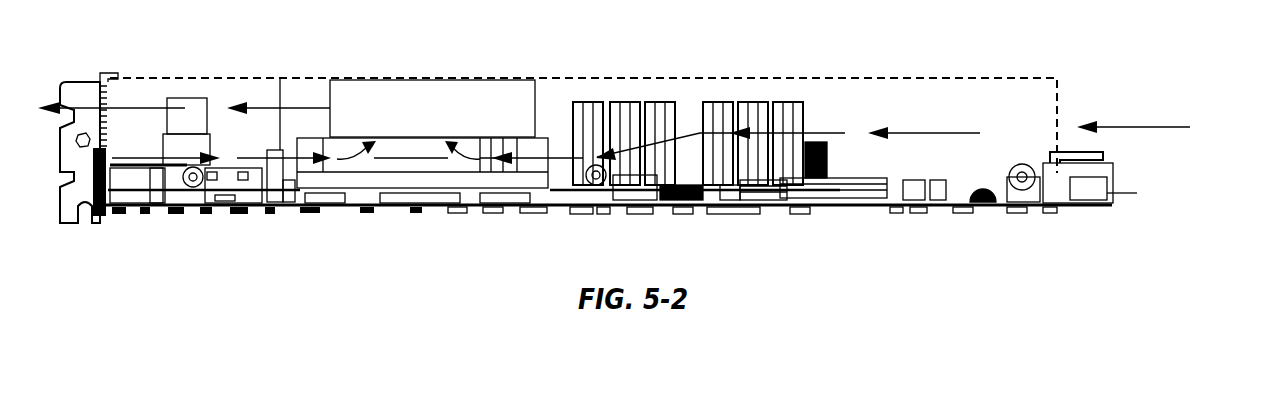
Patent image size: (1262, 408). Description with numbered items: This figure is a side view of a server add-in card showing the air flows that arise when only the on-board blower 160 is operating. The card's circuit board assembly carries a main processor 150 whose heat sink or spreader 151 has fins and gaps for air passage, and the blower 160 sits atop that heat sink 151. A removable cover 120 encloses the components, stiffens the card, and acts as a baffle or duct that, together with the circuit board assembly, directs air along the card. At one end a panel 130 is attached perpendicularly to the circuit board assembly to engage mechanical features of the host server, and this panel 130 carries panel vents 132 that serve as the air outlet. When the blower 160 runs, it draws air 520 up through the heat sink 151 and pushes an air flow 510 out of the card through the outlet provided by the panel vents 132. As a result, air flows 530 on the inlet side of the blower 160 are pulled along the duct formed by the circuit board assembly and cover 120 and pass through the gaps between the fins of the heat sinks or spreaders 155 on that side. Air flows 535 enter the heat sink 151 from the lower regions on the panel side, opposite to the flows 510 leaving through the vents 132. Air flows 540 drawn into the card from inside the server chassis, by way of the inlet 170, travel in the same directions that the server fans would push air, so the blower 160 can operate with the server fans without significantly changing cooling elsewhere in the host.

The cover 120 is at (865, 77).
The panel 130 is at (63, 157).
The panel vents 132 is at (108, 92).
The main processor 150 is at (368, 200).
The heat sink or spreader 151 is at (424, 158).
The heat sinks or spreaders 155 is at (800, 112).
The blower 160 is at (448, 118).
The inlet 170 is at (1082, 102).
The air flow 510 is at (172, 112).
The air 520 is at (364, 134).
The air flows 530 is at (928, 130).
The air flows 535 is at (289, 156).
The air flows 540 is at (1117, 127).